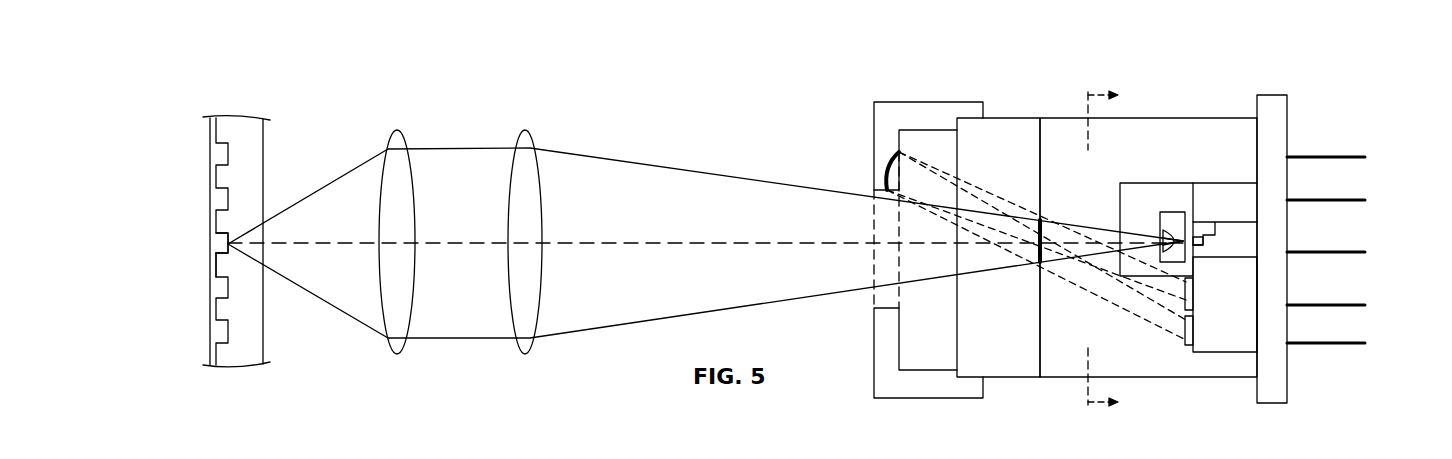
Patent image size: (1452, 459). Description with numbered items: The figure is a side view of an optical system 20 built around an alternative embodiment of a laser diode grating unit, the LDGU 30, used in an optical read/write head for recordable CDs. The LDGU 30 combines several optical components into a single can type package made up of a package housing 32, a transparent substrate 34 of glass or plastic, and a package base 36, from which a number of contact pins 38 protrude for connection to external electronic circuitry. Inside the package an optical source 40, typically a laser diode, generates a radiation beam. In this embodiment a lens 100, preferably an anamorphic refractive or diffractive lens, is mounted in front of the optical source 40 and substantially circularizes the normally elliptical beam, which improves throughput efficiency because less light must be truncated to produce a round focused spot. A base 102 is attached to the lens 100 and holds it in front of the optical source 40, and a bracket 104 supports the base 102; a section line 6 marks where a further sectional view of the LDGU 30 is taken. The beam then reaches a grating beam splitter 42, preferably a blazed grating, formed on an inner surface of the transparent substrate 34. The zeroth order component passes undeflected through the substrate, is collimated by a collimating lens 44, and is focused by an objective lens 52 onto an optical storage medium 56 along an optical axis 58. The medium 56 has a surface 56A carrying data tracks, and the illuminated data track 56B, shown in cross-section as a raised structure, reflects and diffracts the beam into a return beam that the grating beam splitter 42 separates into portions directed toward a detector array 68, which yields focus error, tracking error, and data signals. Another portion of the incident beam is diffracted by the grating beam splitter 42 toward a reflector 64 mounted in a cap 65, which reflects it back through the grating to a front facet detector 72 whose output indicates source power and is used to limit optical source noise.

The optical storage medium 56 is at (192, 113).
The surface 56A is at (216, 269).
The data track 56B is at (228, 244).
The system 20 is at (508, 56).
The objective lens 52 is at (396, 131).
The collimating lens 44 is at (525, 131).
The optical axis 58 is at (700, 242).
The cap 65 is at (920, 102).
The reflector 64 is at (888, 162).
The LDGU 30 is at (1053, 50).
The transparent substrate 34 is at (1012, 118).
The grating beam splitter 42 is at (1040, 262).
The package housing 32 is at (1165, 118).
The section line 6 is at (1103, 253).
The bracket 104 is at (1120, 215).
The base 102 is at (1163, 212).
The lens 100 is at (1172, 247).
The optical source 40 is at (1203, 237).
The detector array 68 is at (1193, 293).
The front facet detector 72 is at (1185, 337).
The package base 36 is at (1279, 95).
The contact pins 38 is at (1362, 190).